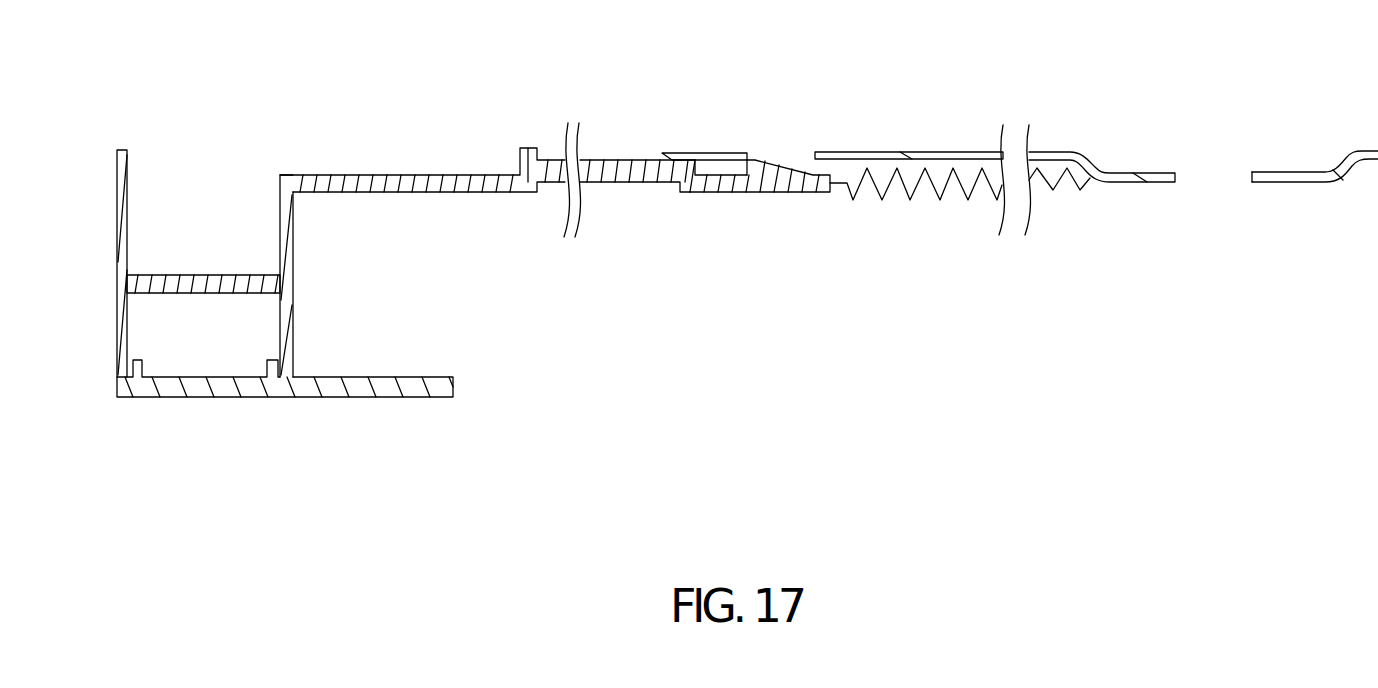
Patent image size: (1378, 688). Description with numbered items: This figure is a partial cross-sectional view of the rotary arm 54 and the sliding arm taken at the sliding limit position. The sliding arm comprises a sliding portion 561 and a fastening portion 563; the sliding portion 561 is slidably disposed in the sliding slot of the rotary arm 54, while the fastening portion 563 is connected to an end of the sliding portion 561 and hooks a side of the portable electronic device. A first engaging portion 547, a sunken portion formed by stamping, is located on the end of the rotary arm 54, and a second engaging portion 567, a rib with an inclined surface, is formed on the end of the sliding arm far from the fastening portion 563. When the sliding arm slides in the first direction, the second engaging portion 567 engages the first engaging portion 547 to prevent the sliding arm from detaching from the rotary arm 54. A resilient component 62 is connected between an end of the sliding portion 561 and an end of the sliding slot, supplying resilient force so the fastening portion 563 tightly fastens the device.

The rotary arm 54 is at (842, 132).
The resilient component 62 is at (858, 196).
The first engaging portion 547 is at (750, 153).
The sliding portion 561 is at (636, 172).
The fastening portion 563 is at (302, 390).
The second engaging portion 567 is at (760, 182).